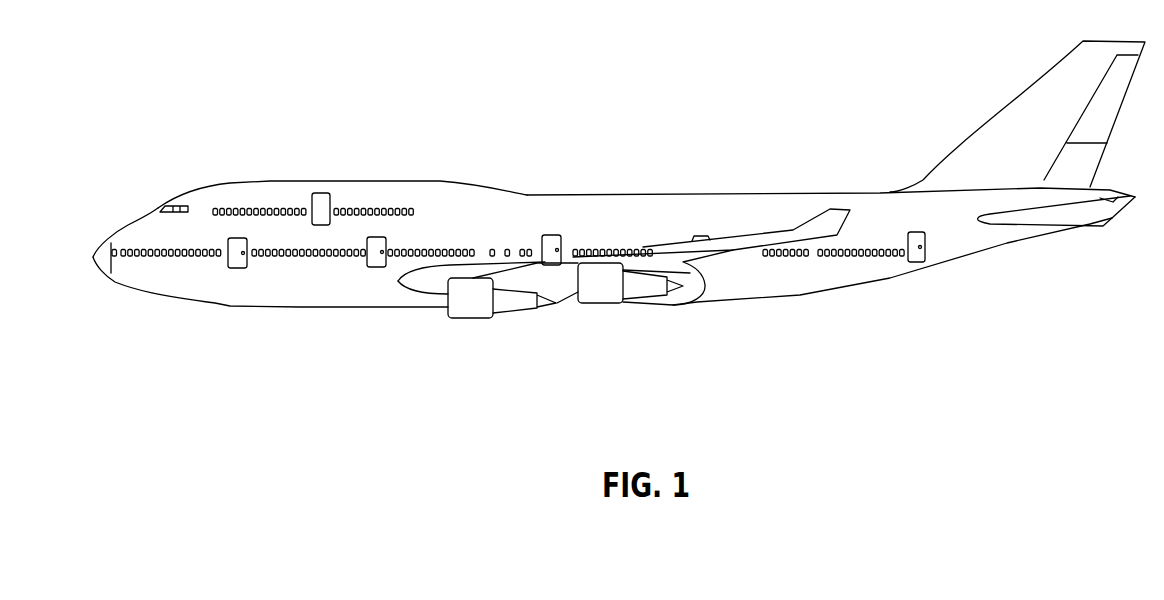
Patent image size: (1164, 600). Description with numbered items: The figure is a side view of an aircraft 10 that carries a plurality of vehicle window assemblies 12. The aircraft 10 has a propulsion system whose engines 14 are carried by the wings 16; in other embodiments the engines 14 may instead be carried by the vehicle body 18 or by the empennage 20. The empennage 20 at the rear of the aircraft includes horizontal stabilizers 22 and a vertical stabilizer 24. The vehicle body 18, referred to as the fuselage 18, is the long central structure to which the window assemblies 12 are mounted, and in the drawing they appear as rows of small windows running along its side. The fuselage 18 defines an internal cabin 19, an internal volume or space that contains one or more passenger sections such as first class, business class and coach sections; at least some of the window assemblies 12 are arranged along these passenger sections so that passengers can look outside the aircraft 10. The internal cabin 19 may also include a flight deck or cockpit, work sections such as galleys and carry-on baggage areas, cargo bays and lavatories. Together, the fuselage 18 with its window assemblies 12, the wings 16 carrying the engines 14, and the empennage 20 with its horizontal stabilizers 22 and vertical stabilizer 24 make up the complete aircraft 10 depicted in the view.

The aircraft 10 is at (234, 176).
The vehicle window assembly 12 is at (366, 206).
The engine 14 is at (482, 298).
The wing 16 is at (685, 262).
The fuselage 18 is at (483, 212).
The internal cabin 19 is at (433, 188).
The empennage 20 is at (958, 130).
The horizontal stabilizer 22 is at (1038, 218).
The vertical stabilizer 24 is at (1087, 128).